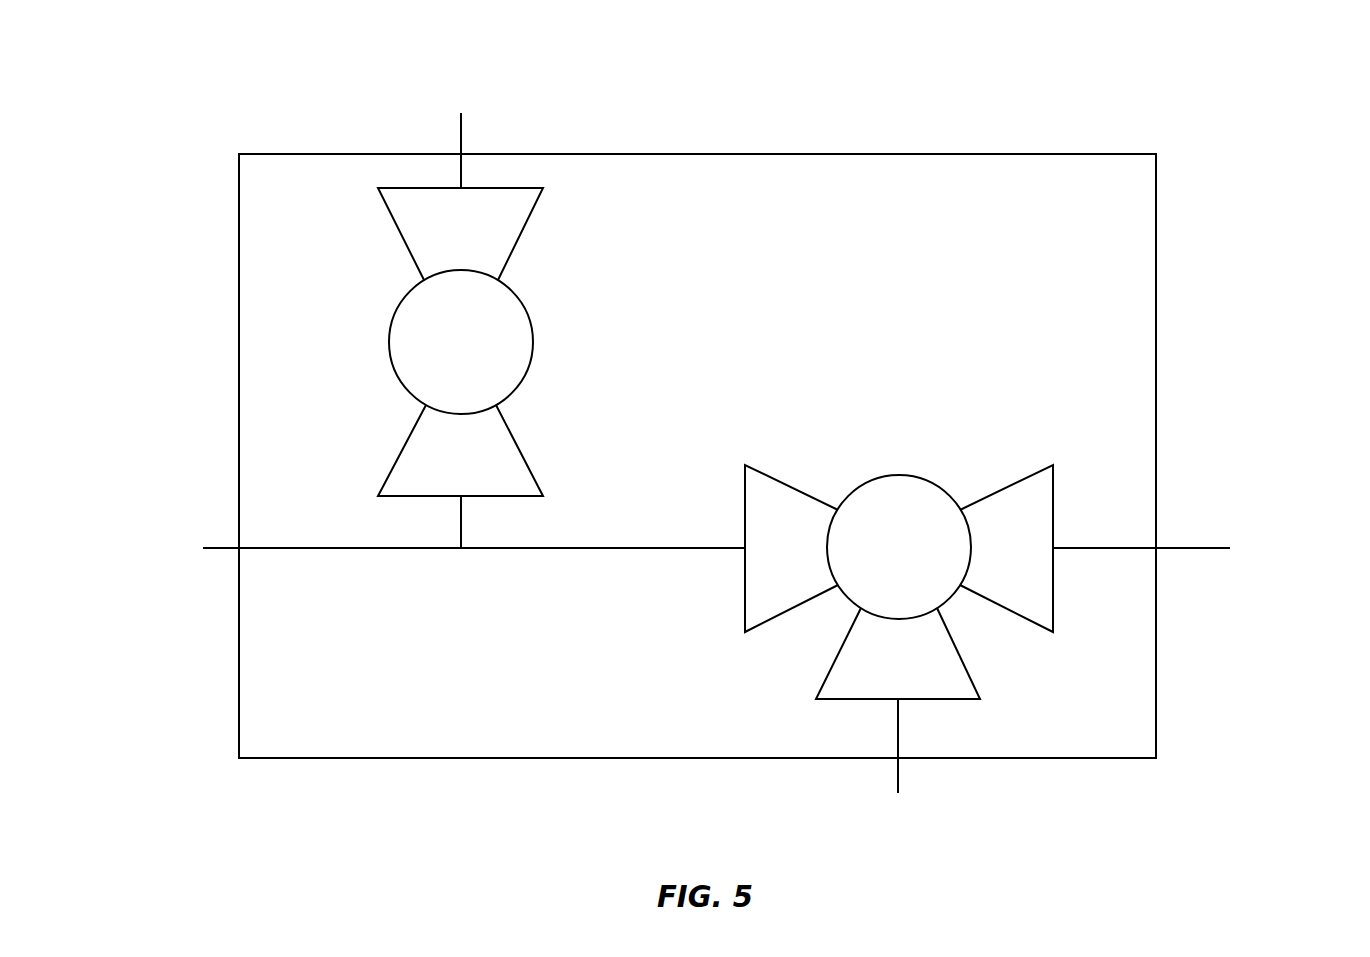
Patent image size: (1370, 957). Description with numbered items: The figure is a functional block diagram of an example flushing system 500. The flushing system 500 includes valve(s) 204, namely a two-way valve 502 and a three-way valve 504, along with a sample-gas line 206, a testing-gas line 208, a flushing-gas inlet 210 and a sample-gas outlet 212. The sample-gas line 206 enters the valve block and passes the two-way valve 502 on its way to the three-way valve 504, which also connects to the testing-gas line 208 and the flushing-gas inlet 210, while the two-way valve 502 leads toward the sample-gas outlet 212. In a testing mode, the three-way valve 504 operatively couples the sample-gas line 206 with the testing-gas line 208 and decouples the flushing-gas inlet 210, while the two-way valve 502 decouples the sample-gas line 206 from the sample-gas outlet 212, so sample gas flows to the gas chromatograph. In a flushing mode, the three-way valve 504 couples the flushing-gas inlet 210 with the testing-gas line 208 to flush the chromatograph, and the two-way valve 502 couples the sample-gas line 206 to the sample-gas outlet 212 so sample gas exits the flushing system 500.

The flushing system 500 is at (1050, 84).
The valve(s) 204 is at (697, 456).
The sample-gas outlet 212 is at (459, 109).
The sample-gas line 206 is at (419, 551).
The testing-gas line 208 is at (1200, 546).
The flushing-gas inlet 210 is at (897, 774).
The two-way valve 502 is at (460, 368).
The three-way valve 504 is at (899, 582).